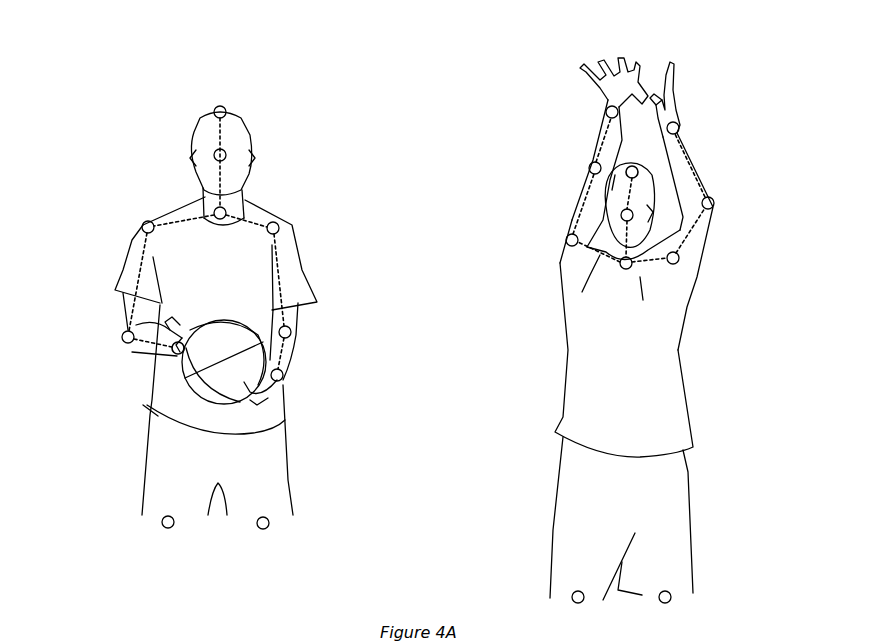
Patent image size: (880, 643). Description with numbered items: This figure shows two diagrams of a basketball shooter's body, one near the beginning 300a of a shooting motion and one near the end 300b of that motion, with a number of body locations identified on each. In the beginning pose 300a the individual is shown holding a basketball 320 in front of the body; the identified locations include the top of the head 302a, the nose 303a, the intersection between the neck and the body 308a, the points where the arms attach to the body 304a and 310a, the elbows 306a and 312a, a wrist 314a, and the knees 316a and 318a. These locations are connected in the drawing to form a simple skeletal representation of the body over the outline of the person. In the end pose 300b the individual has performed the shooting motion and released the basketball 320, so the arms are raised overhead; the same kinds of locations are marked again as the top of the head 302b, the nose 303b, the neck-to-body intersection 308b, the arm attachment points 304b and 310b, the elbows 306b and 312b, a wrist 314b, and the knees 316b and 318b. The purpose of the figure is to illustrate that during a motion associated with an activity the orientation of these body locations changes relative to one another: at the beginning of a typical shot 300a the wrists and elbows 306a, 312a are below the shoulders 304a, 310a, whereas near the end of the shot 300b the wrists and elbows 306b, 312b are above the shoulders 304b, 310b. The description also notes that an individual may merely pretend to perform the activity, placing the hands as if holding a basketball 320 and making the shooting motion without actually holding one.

The beginning of shooting motion 300a is at (152, 50).
The end of shooting motion 300b is at (538, 52).
The top of the head 302a is at (214, 110).
The nose 303a is at (214, 154).
The arm attachment to body 304a is at (143, 225).
The elbow 306a is at (122, 335).
The intersection between the neck and the body 308a is at (226, 212).
The arm attachment to body 310a is at (279, 231).
The elbow 312a is at (291, 336).
The wrist 314a is at (282, 381).
The knee 316a is at (163, 525).
The knee 318a is at (269, 523).
The basketball 320 is at (212, 380).
The top of the head 302b is at (606, 111).
The arm attachment to body 304b is at (589, 167).
The nose 303b is at (621, 214).
The elbow 306b is at (566, 240).
The intersection between the neck and the body 308b is at (679, 127).
The arm attachment to body 310b is at (714, 203).
The elbow 312b is at (679, 259).
The wrist 314b is at (631, 268).
The knee 316b is at (572, 596).
The knee 318b is at (671, 598).